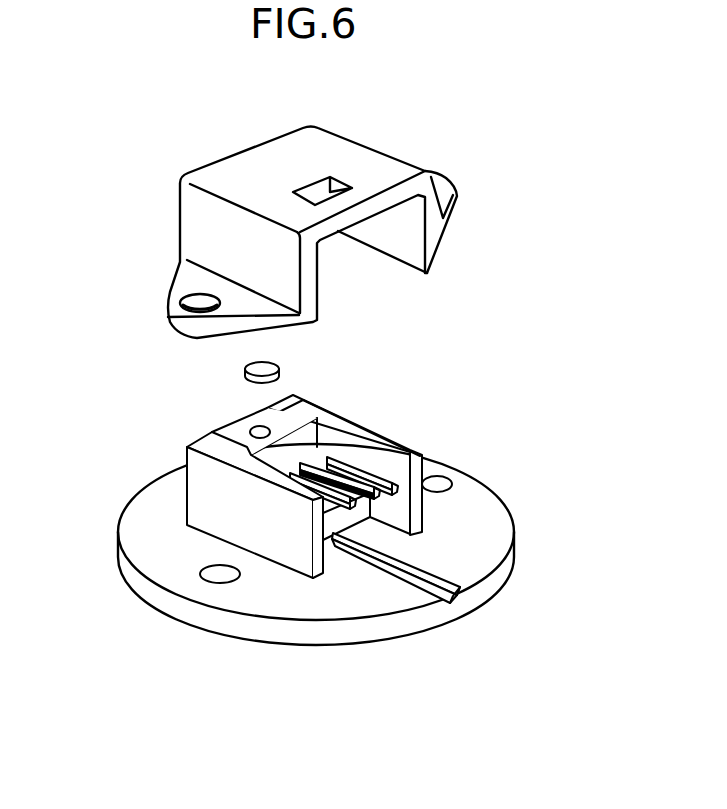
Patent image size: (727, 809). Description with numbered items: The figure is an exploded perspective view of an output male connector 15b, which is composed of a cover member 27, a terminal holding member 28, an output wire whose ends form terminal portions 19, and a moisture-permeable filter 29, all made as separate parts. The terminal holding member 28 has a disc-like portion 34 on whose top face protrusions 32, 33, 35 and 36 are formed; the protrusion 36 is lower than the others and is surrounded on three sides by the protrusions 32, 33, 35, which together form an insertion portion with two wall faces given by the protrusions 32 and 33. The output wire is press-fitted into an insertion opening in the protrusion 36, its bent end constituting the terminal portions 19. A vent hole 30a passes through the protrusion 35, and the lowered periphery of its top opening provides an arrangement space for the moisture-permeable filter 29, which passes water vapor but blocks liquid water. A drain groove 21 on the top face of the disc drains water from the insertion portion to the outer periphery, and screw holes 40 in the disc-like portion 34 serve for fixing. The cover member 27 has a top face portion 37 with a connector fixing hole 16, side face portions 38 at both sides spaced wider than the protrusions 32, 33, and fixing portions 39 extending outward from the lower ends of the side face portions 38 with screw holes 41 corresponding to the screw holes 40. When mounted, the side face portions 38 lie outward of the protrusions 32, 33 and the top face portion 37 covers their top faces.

The output male connector 15b is at (193, 137).
The connector fixing hole 16 is at (322, 185).
The terminal portions 19 is at (440, 503).
The drain groove 21 is at (398, 575).
The cover member 27 is at (312, 191).
The terminal holding member 28 is at (293, 456).
The moisture-permeable filter 29 is at (244, 370).
The vent hole 30a is at (320, 435).
The protrusion 32 is at (220, 503).
The protrusion 33 is at (396, 435).
The disc-like portion 34 is at (340, 544).
The protrusion 35 is at (203, 437).
The protrusion 36 is at (347, 455).
The top face portion 37 is at (365, 179).
The side face portions 38 is at (200, 224).
The fixing portions 39 is at (312, 238).
The screw holes 40 is at (200, 578).
The screw holes 41 is at (183, 298).